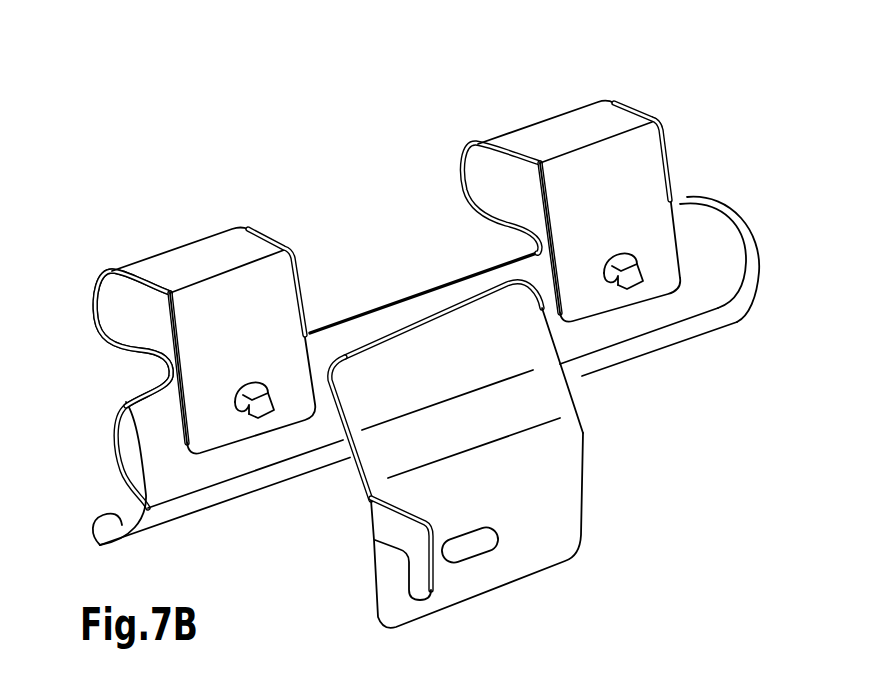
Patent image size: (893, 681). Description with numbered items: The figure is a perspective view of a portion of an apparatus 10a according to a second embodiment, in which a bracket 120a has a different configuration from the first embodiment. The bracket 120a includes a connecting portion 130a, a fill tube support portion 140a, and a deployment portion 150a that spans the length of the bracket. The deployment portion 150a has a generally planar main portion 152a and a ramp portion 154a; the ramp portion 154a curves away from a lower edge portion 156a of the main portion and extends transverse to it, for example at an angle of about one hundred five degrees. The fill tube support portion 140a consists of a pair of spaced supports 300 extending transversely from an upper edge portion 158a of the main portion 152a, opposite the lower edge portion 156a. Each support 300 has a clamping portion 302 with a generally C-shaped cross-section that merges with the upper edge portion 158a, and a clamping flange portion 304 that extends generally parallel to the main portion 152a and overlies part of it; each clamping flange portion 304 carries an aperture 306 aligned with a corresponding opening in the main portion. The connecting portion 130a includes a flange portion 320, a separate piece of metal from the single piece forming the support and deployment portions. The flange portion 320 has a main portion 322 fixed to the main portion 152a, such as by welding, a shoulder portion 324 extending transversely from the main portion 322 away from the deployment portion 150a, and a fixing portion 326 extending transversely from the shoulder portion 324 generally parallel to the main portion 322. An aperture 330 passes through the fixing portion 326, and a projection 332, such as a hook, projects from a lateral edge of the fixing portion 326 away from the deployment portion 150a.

The apparatus 10a is at (455, 327).
The bracket 120a is at (680, 80).
The connecting portion 130a is at (546, 430).
The fill tube support portion 140a is at (698, 152).
The deployment portion 150a is at (455, 351).
The main portion 152a is at (157, 410).
The ramp portion 154a is at (113, 520).
The lower edge portion 156a is at (182, 475).
The upper edge portion 158a is at (388, 302).
The support 300 is at (442, 230).
The clamping portion 302 is at (166, 268).
The clamping flange portion 304 is at (247, 290).
The aperture 306 is at (250, 382).
The flange portion 320 is at (489, 430).
The main portion 322 is at (442, 337).
The shoulder portion 324 is at (380, 452).
The fixing portion 326 is at (542, 542).
The aperture 330 is at (470, 548).
The projection 332 is at (408, 537).